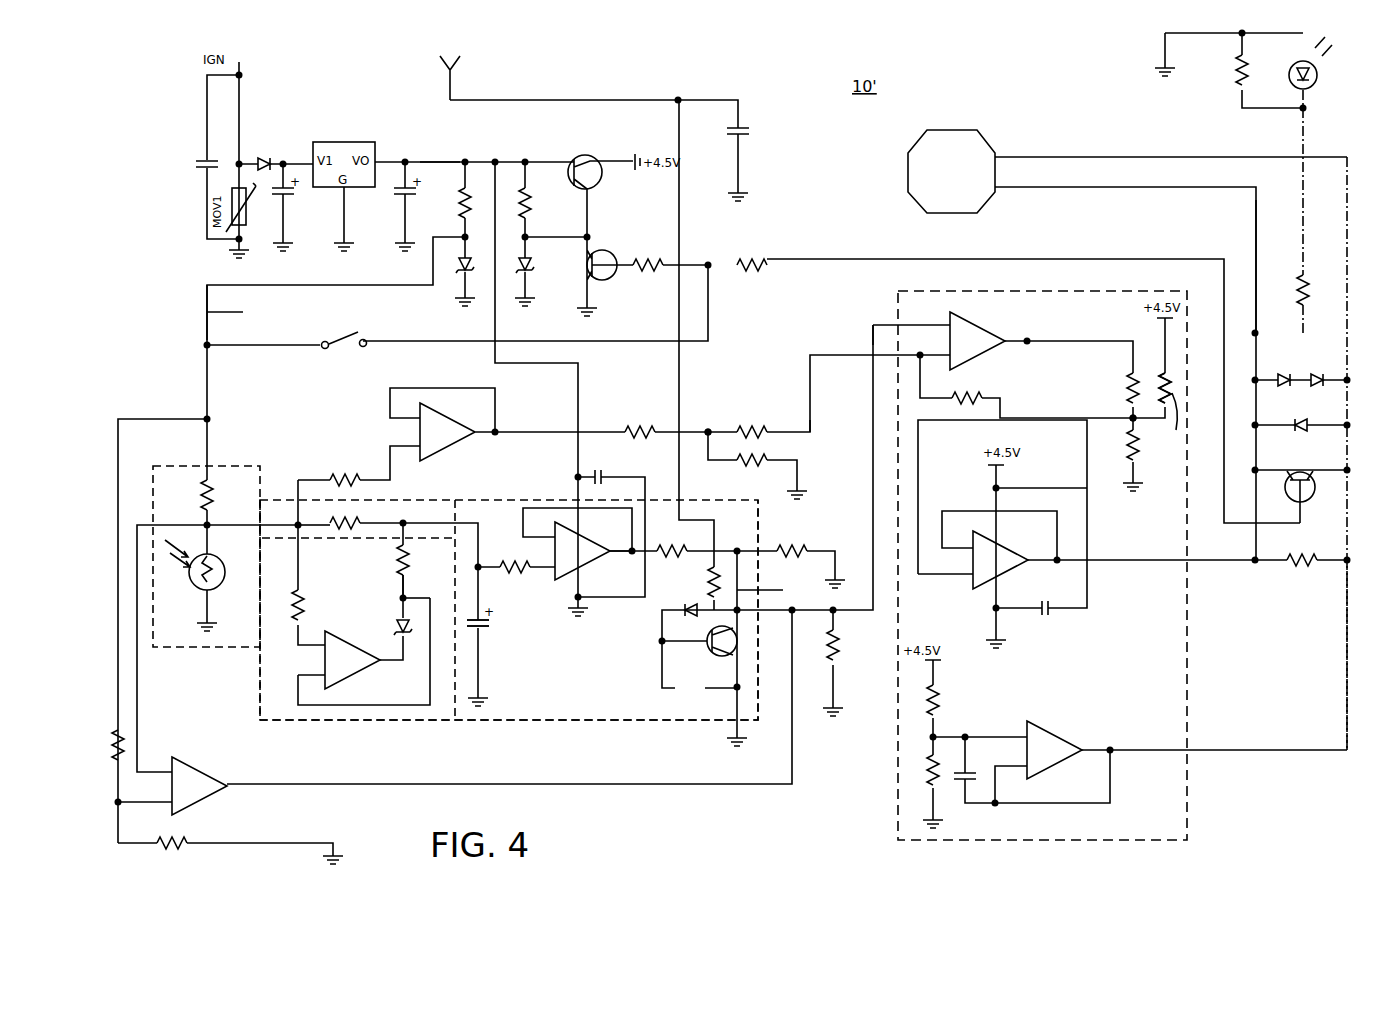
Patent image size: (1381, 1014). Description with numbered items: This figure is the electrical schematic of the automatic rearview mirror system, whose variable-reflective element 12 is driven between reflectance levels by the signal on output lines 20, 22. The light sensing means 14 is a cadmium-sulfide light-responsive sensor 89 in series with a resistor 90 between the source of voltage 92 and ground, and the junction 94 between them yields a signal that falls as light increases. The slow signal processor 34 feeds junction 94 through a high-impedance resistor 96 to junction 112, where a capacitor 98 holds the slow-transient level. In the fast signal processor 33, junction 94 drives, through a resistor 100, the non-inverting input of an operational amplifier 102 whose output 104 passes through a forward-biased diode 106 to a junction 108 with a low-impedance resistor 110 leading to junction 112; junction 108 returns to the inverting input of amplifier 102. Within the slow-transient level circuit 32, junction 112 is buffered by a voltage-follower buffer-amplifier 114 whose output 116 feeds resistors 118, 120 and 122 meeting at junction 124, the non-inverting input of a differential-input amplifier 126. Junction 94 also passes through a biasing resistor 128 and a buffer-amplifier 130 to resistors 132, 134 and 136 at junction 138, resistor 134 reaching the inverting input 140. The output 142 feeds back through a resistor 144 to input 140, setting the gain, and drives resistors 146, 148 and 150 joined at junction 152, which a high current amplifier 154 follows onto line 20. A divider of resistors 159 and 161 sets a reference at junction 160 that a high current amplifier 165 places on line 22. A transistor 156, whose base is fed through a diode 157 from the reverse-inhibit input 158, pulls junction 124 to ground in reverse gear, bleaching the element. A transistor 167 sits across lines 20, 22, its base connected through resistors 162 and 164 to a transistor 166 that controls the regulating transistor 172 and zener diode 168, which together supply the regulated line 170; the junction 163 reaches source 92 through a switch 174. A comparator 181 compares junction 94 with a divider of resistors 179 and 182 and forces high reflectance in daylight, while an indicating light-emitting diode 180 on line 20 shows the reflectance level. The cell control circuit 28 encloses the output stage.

The variable-reflective element 12 is at (975, 213).
The light sensor means 14 is at (213, 647).
The output line 20 is at (1255, 233).
The output line 22 is at (1347, 630).
The cell control circuit 28 is at (1190, 660).
The slow-transient level circuit 32 is at (535, 718).
The fast signal processor 33 is at (340, 720).
The slow signal processor 34 is at (282, 498).
The light-responsive sensor 89 is at (222, 585).
The resistor 90 is at (212, 495).
The source of voltage 92 is at (236, 312).
The junction 94 is at (215, 528).
The high-impedance resistor 96 is at (345, 522).
The capacitor 98 is at (490, 624).
The resistor 100 is at (306, 606).
The operational amplifier 102 is at (362, 668).
The output 104 is at (403, 647).
The forward-biased diode 106 is at (398, 628).
The junction 108 is at (398, 595).
The low-impedance resistor 110 is at (396, 558).
The junction 112 is at (480, 551).
The voltage-follower buffer-amplifier 114 is at (562, 578).
The output 116 is at (660, 548).
The resistor 118 is at (696, 566).
The resistor 120 is at (795, 546).
The resistor 122 is at (845, 640).
The junction 124 is at (873, 323).
The differential-input amplifier 126 is at (975, 360).
The biasing resistor 128 is at (342, 476).
The voltage-follower buffer-amplifier 130 is at (455, 447).
The resistor 132 is at (640, 428).
The resistor 134 is at (758, 425).
The resistor 136 is at (745, 467).
The junction 138 is at (712, 430).
The inverting input 140 is at (812, 435).
The output 142 is at (1040, 338).
The resistor 144 is at (990, 402).
The resistor 146 is at (1128, 388).
The resistor 148 is at (1160, 413).
The resistor 150 is at (1127, 450).
The junction 152 is at (1128, 421).
The voltage-follower high current amplifier 154 is at (965, 585).
The transistor 156 is at (706, 648).
The diode 157 is at (680, 616).
The reverse-inhibit input 158 is at (448, 92).
The resistor 159 is at (940, 700).
The junction 160 is at (938, 736).
The resistor 161 is at (932, 790).
The resistor 162 is at (757, 262).
The junction 163 is at (690, 265).
The resistor 164 is at (645, 272).
The voltage-follower high current amplifier 165 is at (1050, 770).
The transistor 166 is at (608, 252).
The transistor 167 is at (1312, 497).
The zener diode 168 is at (533, 262).
The regulated supply line 170 is at (430, 162).
The transistor 172 is at (595, 156).
The switch 174 is at (350, 348).
The resistor 179 is at (123, 737).
The indicating light-emitting diode 180 is at (1313, 85).
The comparator 181 is at (200, 775).
The resistor 182 is at (180, 840).